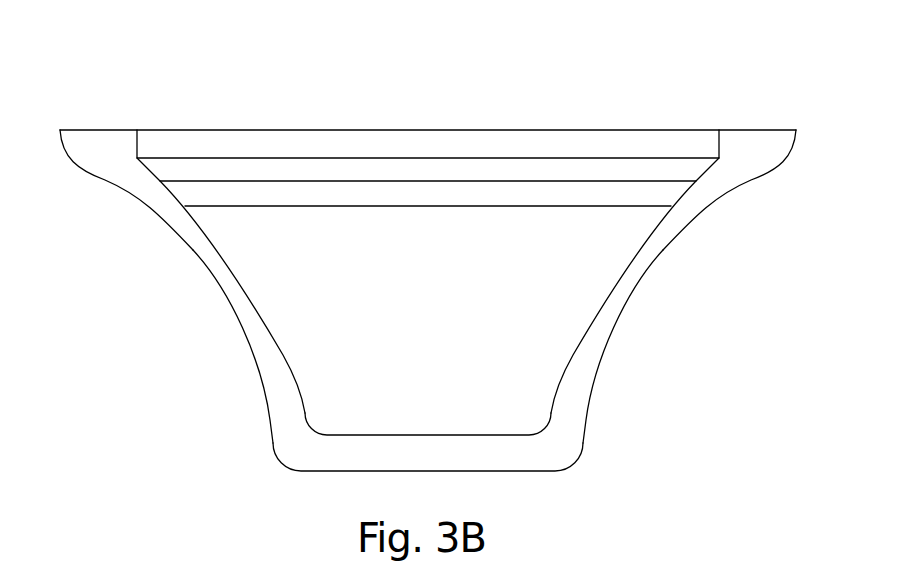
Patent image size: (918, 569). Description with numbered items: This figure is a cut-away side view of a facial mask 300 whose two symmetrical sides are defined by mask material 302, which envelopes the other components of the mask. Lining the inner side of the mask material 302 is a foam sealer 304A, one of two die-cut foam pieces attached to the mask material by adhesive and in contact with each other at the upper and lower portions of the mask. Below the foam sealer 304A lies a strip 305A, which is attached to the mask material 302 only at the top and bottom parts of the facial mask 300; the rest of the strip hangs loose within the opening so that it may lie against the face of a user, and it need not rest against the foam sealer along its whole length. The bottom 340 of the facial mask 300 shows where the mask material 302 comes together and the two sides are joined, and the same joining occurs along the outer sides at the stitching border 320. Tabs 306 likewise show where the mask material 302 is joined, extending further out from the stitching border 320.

The facial mask 300 is at (138, 420).
The mask material 302 is at (426, 288).
The foam sealer 304A is at (317, 140).
The strip 305A is at (488, 182).
The tabs 306 is at (97, 129).
The stitching border 320 is at (173, 230).
The bottom 340 is at (500, 472).